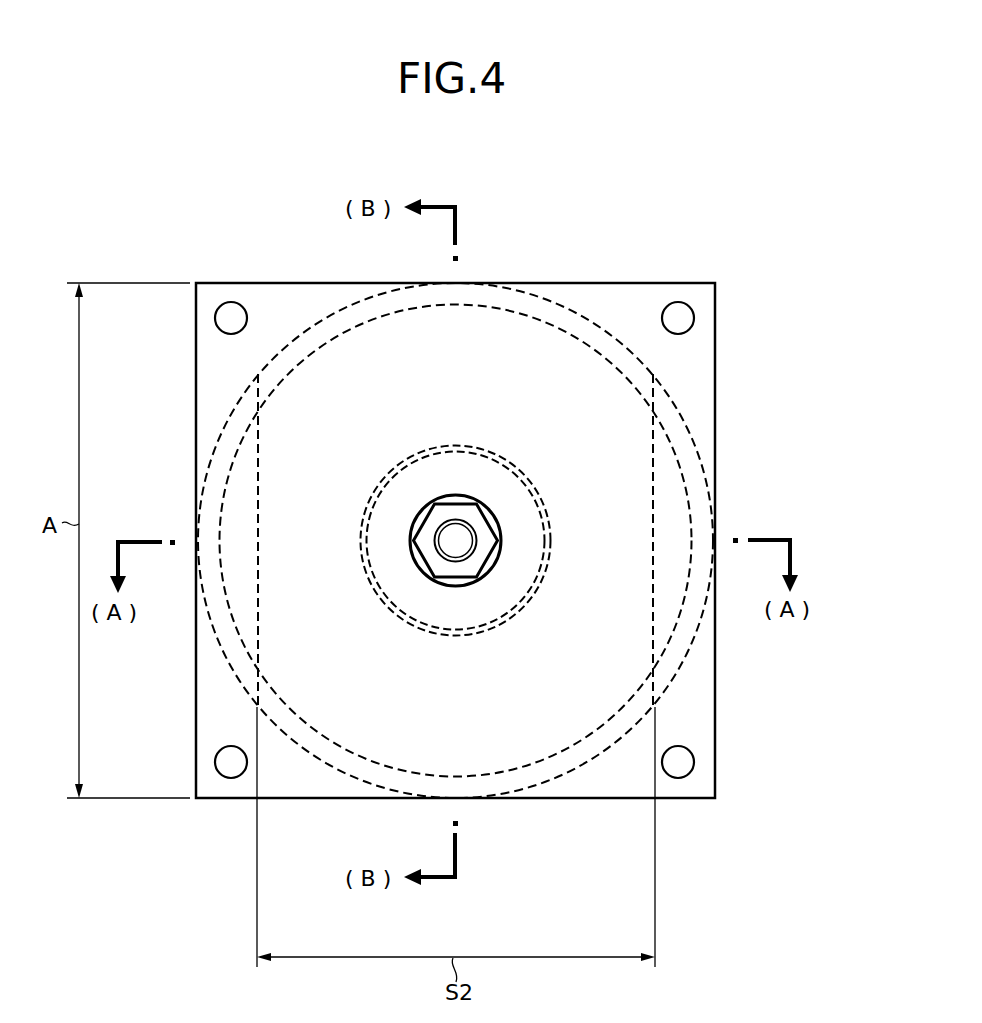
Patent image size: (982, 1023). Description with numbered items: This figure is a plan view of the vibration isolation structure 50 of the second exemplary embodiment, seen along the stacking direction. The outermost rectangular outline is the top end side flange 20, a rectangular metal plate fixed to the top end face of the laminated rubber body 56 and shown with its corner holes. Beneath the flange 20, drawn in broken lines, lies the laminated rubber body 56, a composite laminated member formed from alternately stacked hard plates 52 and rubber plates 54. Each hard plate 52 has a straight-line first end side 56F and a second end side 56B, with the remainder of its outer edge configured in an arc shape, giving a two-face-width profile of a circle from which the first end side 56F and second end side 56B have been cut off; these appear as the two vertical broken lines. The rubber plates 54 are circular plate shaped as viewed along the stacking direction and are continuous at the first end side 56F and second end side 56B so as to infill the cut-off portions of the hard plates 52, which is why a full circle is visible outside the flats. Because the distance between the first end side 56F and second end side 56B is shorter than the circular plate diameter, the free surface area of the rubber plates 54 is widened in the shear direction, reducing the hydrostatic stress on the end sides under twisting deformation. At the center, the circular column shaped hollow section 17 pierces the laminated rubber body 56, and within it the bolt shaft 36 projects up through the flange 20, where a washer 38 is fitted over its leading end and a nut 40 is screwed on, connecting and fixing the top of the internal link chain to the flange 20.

The vibration isolation structure 50 is at (785, 275).
The flange 20 is at (693, 386).
The hard plates 52 is at (560, 305).
The rubber plates 54 is at (700, 452).
The laminated rubber body 56 is at (706, 622).
The first end side 56F is at (258, 552).
The second end side 56B is at (653, 517).
The hollow section 17 is at (485, 622).
The washer 38 is at (501, 527).
The nut 40 is at (421, 556).
The bolt shaft 36 is at (448, 561).